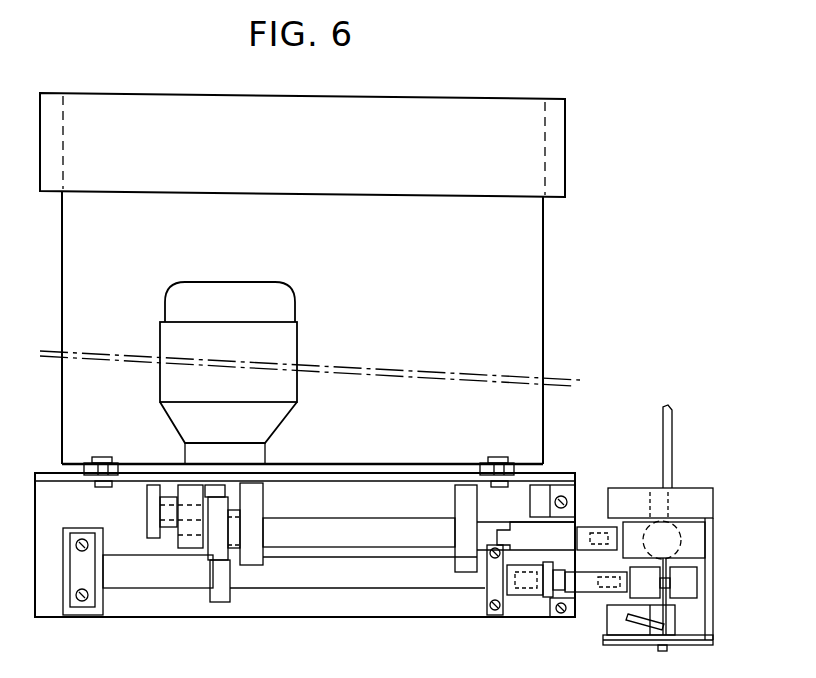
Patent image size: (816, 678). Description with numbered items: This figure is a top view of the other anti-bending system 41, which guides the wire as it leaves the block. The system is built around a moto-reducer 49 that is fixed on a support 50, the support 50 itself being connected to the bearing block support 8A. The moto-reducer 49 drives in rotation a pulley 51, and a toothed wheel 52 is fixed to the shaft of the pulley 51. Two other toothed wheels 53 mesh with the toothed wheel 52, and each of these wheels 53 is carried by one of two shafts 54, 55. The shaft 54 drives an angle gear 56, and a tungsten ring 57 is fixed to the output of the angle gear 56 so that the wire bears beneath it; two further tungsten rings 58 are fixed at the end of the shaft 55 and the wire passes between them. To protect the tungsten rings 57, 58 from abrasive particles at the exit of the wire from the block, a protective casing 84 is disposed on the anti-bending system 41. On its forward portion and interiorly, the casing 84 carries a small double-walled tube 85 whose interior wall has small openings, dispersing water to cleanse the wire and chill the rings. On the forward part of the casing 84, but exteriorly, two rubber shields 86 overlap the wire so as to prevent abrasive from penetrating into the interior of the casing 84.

The bearing block support 8A is at (326, 152).
The support 50 is at (432, 252).
The anti-bending system 41 is at (608, 343).
The moto-reducer 49 is at (190, 292).
The pulley 51 is at (156, 505).
The toothed wheel 52 is at (214, 492).
The toothed wheels 53 is at (216, 528).
The shaft 54 is at (332, 530).
The shaft 55 is at (314, 584).
The angle gear 56 is at (700, 505).
The tungsten ring 57 is at (655, 500).
The tungsten rings 58 is at (692, 583).
The protective casing 84 is at (713, 503).
The double-walled tube 85 is at (608, 605).
The rubber shields 86 is at (622, 641).